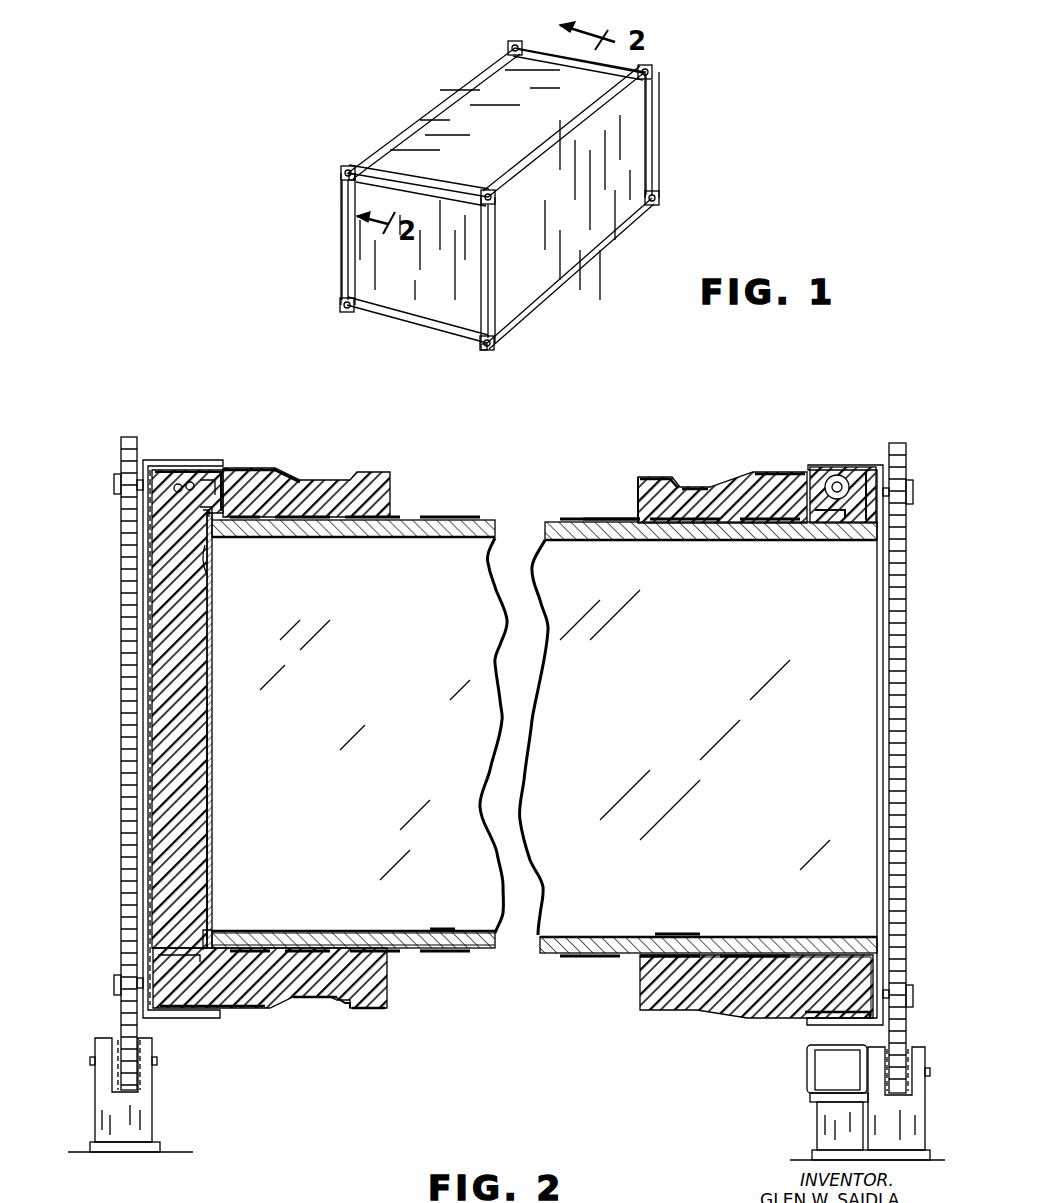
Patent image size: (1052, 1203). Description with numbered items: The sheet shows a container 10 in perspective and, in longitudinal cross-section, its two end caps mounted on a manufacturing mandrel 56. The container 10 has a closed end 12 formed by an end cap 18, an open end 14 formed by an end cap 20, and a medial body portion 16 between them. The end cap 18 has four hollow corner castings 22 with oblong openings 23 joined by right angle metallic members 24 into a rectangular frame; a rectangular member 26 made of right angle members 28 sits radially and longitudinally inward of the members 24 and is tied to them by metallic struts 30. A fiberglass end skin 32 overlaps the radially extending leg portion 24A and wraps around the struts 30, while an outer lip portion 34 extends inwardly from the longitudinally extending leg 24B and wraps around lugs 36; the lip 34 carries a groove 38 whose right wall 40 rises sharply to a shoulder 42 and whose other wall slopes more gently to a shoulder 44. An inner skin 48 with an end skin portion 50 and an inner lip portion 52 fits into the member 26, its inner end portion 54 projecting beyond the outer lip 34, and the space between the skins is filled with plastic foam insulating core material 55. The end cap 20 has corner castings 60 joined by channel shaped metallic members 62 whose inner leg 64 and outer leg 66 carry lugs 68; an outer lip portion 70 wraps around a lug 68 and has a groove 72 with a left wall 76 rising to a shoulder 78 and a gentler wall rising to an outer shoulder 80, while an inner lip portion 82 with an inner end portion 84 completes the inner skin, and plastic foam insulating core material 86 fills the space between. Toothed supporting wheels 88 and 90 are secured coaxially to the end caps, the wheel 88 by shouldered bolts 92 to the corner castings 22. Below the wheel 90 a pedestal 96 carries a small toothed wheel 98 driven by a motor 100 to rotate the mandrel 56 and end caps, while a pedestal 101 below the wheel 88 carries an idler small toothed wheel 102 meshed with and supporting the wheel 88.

In FIG. 1, the container 10 is at (382, 68).
In FIG. 2, the container 10 is at (135, 358).
In FIG. 1, the closed end 12 is at (398, 320).
In FIG. 2, the closed end 12 is at (142, 730).
In FIG. 1, the open end 14 is at (670, 115).
In FIG. 2, the open end 14 is at (882, 758).
In FIG. 1, the medial body portion 16 is at (580, 268).
In FIG. 1, the end cap 18 is at (408, 272).
In FIG. 2, the end cap 18 is at (320, 1045).
In FIG. 2, the end cap 20 is at (666, 1035).
In FIG. 1, the corner castings 22 is at (344, 166).
In FIG. 2, the corner castings 22 is at (156, 466).
In FIG. 1, the oblong openings 23 is at (341, 176).
In FIG. 1, the right angle shaped metallic members 24 is at (356, 188).
In FIG. 2, the right angle shaped metallic members 24 is at (190, 482).
In FIG. 2, the radially extending leg portion 24A is at (178, 482).
In FIG. 2, the longitudinally extending leg 24B is at (205, 480).
In FIG. 2, the rectangular member 26 is at (212, 567).
In FIG. 2, the right angle metallic members 28 is at (238, 525).
In FIG. 2, the metallic struts 30 is at (165, 975).
In FIG. 2, the end skin 32 is at (150, 640).
In FIG. 2, the outer lip portion 34 is at (243, 1020).
In FIG. 2, the lugs 36 is at (265, 470).
In FIG. 2, the groove 38 is at (333, 1000).
In FIG. 2, the right wall 40 is at (352, 1010).
In FIG. 2, the shoulder 42 is at (380, 1010).
In FIG. 2, the shoulder 44 is at (258, 1010).
In FIG. 2, the inner skin 48 is at (222, 630).
In FIG. 2, the end skin portion 50 is at (213, 790).
In FIG. 2, the inner lip portion 52 is at (345, 535).
In FIG. 2, the inner end portion 54 is at (438, 950).
In FIG. 2, the plastic foam insulating core material 55 is at (200, 685).
In FIG. 2, the mandrel 56 is at (438, 928).
In FIG. 1, the corner castings 60 is at (508, 46).
In FIG. 2, the corner castings 60 is at (866, 472).
In FIG. 1, the channel shaped metallic members 62 is at (537, 50).
In FIG. 2, the channel shaped metallic members 62 is at (870, 512).
In FIG. 2, the inner leg 64 is at (845, 520).
In FIG. 2, the outer leg 66 is at (845, 1012).
In FIG. 2, the lugs 68 is at (840, 482).
In FIG. 2, the outer lip portion 70 is at (763, 460).
In FIG. 2, the groove 72 is at (693, 480).
In FIG. 2, the left wall 76 is at (680, 478).
In FIG. 2, the shoulder 78 is at (638, 472).
In FIG. 2, the outer shoulder 80 is at (790, 470).
In FIG. 2, the inner lip portion 82 is at (673, 932).
In FIG. 2, the inner end portion 84 is at (590, 519).
In FIG. 2, the plastic foam insulating core material 86 is at (645, 975).
In FIG. 2, the supporting wheel 88 is at (122, 445).
In FIG. 2, the supporting wheel 90 is at (900, 860).
In FIG. 2, the shouldered bolt 92 is at (130, 970).
In FIG. 2, the pedestal 96 is at (915, 1130).
In FIG. 2, the small toothed wheel 98 is at (895, 1055).
In FIG. 2, the motor 100 is at (820, 1075).
In FIG. 2, the pedestal 101 is at (148, 1125).
In FIG. 2, the small toothed wheel 102 is at (125, 1087).